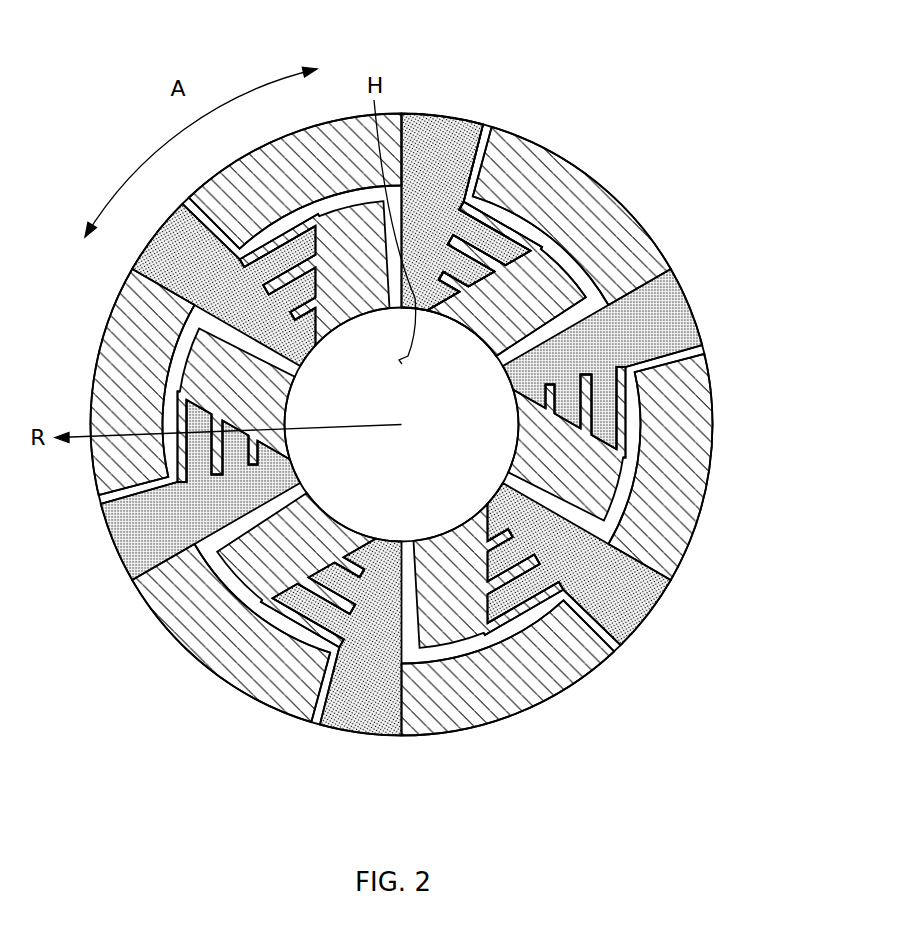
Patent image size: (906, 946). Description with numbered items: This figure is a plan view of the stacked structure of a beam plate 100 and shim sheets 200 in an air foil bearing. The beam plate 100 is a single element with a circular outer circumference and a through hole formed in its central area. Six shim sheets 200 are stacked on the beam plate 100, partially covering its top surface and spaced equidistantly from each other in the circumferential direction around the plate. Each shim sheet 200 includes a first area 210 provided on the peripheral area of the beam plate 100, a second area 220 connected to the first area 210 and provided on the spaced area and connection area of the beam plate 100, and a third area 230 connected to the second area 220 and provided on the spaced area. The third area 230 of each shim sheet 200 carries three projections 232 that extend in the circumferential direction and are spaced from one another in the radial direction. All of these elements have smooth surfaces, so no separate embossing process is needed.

The beam plate 100 is at (702, 307).
The shim sheet 200 is at (572, 58).
The first area 210 is at (441, 213).
The second area 220 is at (466, 210).
The third area 230 is at (509, 218).
The projections 232 is at (445, 301).